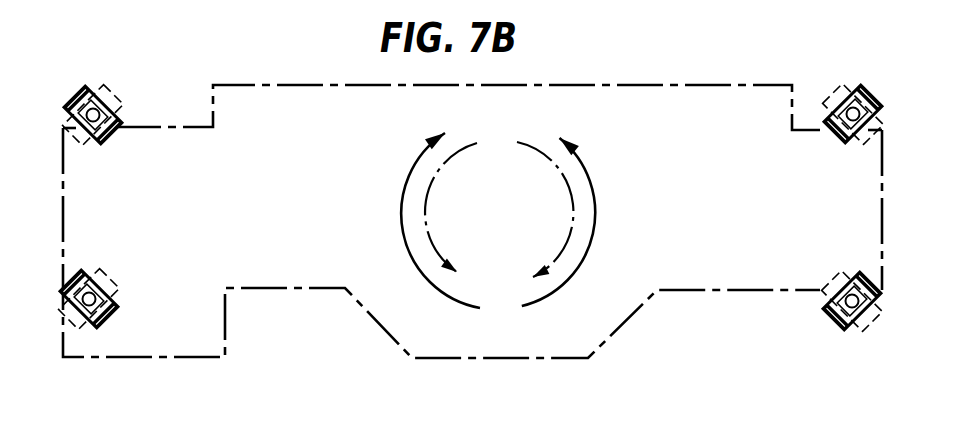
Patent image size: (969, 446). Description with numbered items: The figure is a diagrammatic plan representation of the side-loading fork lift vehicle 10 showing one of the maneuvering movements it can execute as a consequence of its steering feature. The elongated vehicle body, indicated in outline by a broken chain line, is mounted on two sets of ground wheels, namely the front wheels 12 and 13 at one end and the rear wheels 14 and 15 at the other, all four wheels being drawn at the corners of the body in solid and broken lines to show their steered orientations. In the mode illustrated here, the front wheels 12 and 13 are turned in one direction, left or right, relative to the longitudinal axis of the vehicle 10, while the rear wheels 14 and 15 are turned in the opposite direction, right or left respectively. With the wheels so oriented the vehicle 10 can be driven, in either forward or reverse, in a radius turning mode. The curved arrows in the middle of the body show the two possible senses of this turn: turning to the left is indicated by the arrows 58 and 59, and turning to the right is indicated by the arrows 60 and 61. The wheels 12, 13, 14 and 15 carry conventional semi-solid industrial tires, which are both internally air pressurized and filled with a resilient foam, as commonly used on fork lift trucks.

The side-loading fork lift vehicle 10 is at (291, 326).
The front ground wheel 12 is at (866, 88).
The front ground wheel 13 is at (832, 322).
The rear ground wheel 14 is at (83, 86).
The rear ground wheel 15 is at (108, 326).
The arrow 58 is at (596, 224).
The arrow 59 is at (442, 170).
The arrow 60 is at (402, 217).
The arrow 61 is at (568, 235).